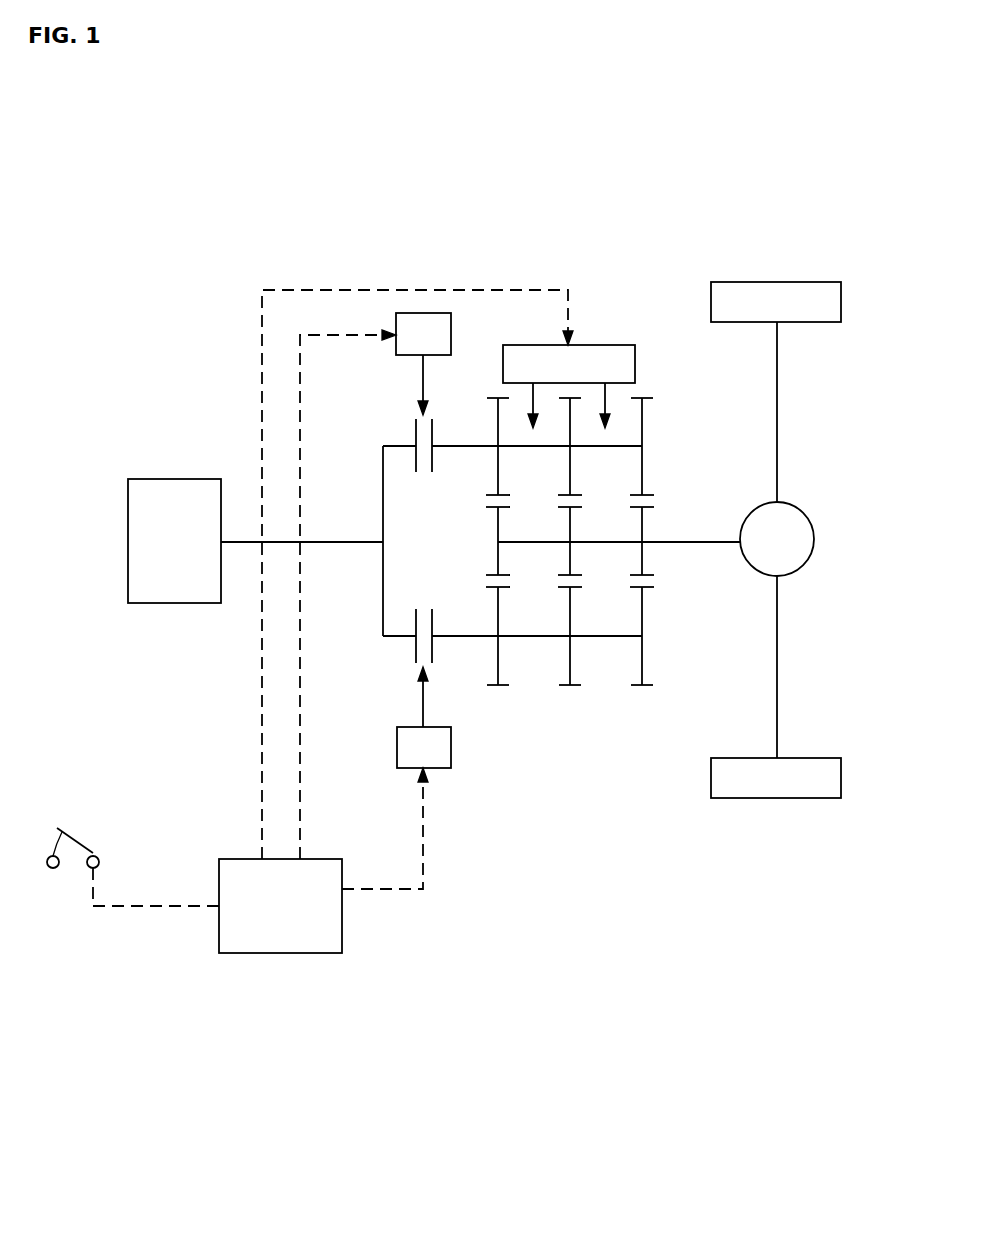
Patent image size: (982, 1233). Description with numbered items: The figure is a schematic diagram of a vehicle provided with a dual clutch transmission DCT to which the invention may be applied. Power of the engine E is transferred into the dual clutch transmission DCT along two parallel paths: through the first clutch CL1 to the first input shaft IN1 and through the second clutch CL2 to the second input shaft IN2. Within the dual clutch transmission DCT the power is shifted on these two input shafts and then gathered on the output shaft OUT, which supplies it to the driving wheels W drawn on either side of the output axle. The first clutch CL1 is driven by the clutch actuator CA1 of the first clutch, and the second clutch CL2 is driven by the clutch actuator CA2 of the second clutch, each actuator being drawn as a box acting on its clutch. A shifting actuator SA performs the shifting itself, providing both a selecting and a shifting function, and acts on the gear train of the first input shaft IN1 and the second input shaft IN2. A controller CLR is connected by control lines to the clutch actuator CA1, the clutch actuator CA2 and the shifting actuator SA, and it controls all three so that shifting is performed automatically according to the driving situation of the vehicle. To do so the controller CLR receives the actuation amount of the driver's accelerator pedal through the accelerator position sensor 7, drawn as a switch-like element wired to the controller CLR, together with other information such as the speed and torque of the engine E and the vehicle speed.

The engine E is at (168, 485).
The dual clutch transmission DCT is at (645, 270).
The first clutch CL1 is at (416, 431).
The second clutch CL2 is at (415, 653).
The first input shaft IN1 is at (623, 445).
The second input shaft IN2 is at (623, 635).
The output shaft OUT is at (692, 540).
The shifting actuator SA is at (613, 353).
The clutch actuator of the first clutch CA1 is at (451, 322).
The clutch actuator of the second clutch CA2 is at (452, 765).
The controller CLR is at (283, 942).
The accelerator position sensor 7 is at (88, 850).
The driving wheels W is at (780, 292).